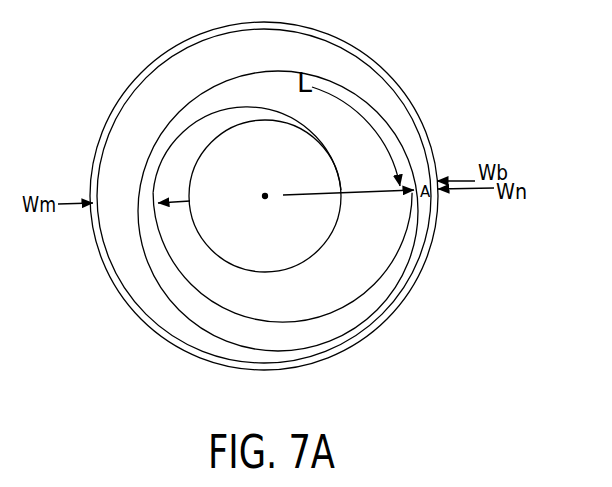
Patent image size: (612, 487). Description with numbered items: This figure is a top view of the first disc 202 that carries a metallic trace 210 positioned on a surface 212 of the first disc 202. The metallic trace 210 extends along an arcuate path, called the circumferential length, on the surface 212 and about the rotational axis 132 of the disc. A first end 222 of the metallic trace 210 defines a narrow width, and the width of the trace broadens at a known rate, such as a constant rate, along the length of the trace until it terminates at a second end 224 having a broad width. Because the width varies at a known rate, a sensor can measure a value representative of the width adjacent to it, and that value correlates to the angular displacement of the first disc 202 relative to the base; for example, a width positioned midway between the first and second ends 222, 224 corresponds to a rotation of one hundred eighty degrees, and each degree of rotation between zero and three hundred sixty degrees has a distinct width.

The first disc 202 is at (416, 102).
The metallic trace 210 is at (239, 68).
The surface 212 is at (369, 266).
The rotational axis 132 is at (265, 191).
The second end 224 is at (414, 174).
The first end 222 is at (404, 205).